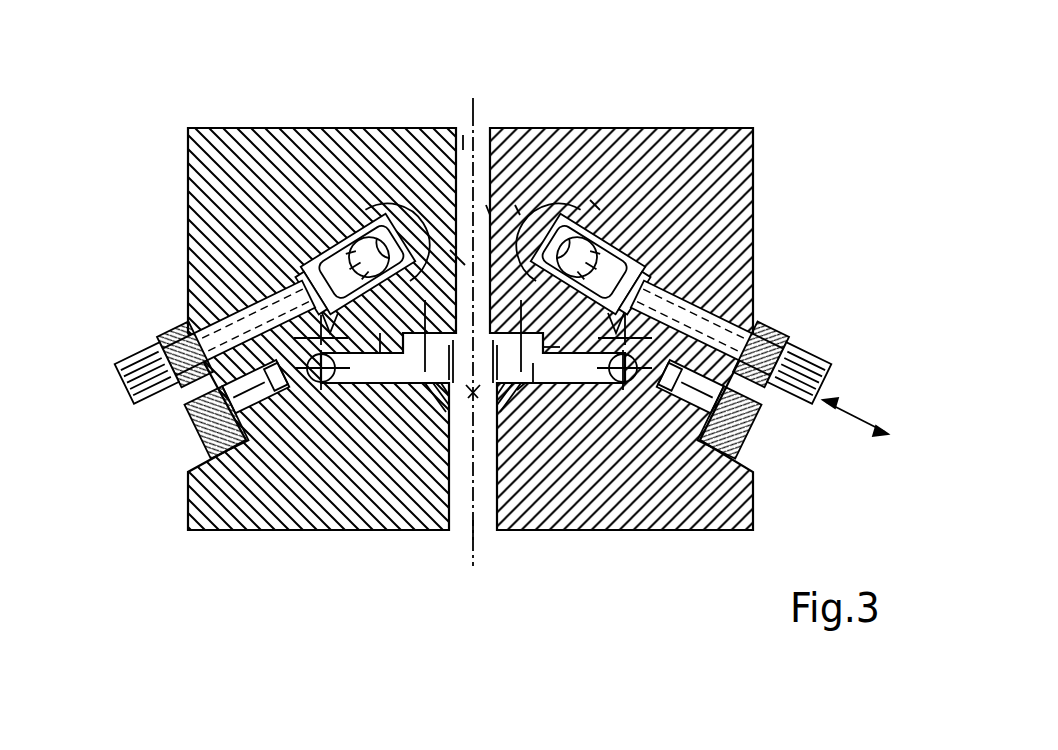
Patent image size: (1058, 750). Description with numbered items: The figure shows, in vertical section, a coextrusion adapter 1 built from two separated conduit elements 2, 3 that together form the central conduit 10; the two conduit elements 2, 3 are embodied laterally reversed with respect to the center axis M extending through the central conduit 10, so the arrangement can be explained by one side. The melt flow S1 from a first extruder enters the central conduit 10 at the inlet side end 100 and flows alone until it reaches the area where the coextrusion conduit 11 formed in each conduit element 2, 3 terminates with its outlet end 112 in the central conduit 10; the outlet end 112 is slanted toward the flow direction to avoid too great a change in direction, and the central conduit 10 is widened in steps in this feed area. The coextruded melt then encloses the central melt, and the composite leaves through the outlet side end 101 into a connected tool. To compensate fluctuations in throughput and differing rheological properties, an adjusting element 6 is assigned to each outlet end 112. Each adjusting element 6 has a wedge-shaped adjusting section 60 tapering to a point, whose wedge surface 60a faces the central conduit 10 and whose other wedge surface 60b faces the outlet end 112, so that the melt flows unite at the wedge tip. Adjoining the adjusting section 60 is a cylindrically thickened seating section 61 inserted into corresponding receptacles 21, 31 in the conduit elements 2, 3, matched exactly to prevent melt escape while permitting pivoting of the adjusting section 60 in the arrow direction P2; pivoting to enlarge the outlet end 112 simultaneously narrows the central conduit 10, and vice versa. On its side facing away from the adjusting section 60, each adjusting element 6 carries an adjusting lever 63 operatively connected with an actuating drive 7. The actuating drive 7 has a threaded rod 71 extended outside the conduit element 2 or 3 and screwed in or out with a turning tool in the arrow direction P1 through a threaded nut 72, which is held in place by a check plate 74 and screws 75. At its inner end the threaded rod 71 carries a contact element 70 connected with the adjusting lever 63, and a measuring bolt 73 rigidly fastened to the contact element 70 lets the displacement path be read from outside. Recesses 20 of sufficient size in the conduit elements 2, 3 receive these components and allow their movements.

The coextrusion adapter 1 is at (191, 95).
The conduit element 2 is at (754, 197).
The conduit element 3 is at (187, 208).
The adjusting element 6 is at (457, 257).
The actuating drive 7 is at (721, 294).
The central conduit 10 is at (595, 205).
The coextrusion conduit 11 is at (345, 385).
The recess 20 is at (515, 210).
The receptacle 21 is at (547, 347).
The receptacle 31 is at (384, 356).
The adjusting section 60 is at (478, 400).
The wedge surface 60a is at (488, 340).
The wedge surface 60b is at (497, 372).
The seating section 61 is at (533, 363).
The adjusting lever 63 is at (580, 225).
The contact element 70 is at (600, 218).
The threaded rod 71 is at (805, 407).
The threaded nut 72 is at (773, 325).
The measuring bolt 73 is at (782, 358).
The check plate 74 is at (745, 460).
The screws 75 is at (757, 428).
The inlet side end 100 is at (463, 135).
The outlet side end 101 is at (482, 540).
The outlet end 112 is at (517, 390).
The center axis M is at (486, 208).
The arrow direction P1 is at (863, 403).
The arrow direction P2 is at (482, 372).
The melt flow S1 is at (473, 98).